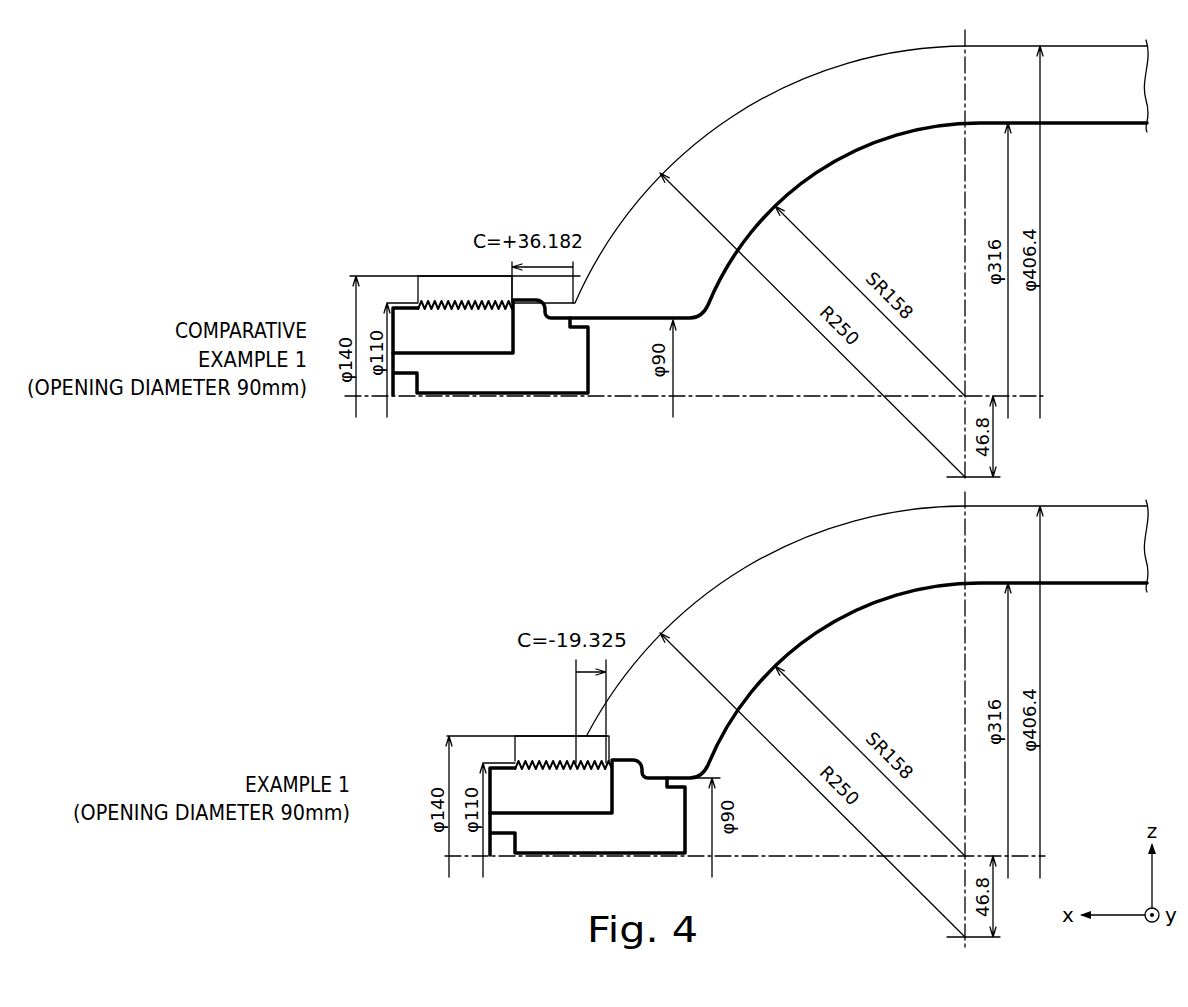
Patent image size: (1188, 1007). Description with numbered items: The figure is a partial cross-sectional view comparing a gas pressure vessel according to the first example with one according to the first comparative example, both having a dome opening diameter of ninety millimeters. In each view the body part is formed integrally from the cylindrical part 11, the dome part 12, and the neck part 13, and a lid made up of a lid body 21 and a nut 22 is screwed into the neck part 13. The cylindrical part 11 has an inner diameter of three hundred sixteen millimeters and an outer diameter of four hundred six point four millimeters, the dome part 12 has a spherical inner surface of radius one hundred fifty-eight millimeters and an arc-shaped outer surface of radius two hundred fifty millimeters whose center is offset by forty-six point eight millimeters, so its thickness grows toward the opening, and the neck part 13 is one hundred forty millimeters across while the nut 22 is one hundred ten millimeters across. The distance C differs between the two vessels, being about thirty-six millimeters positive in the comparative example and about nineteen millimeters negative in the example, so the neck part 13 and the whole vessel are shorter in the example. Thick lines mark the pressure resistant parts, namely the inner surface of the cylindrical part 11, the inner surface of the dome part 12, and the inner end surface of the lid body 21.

The cylindrical part 11 is at (1091, 610).
The dome part 12 is at (703, 601).
The neck part 13 is at (522, 733).
The lid body 21 is at (533, 376).
The nut 22 is at (440, 347).